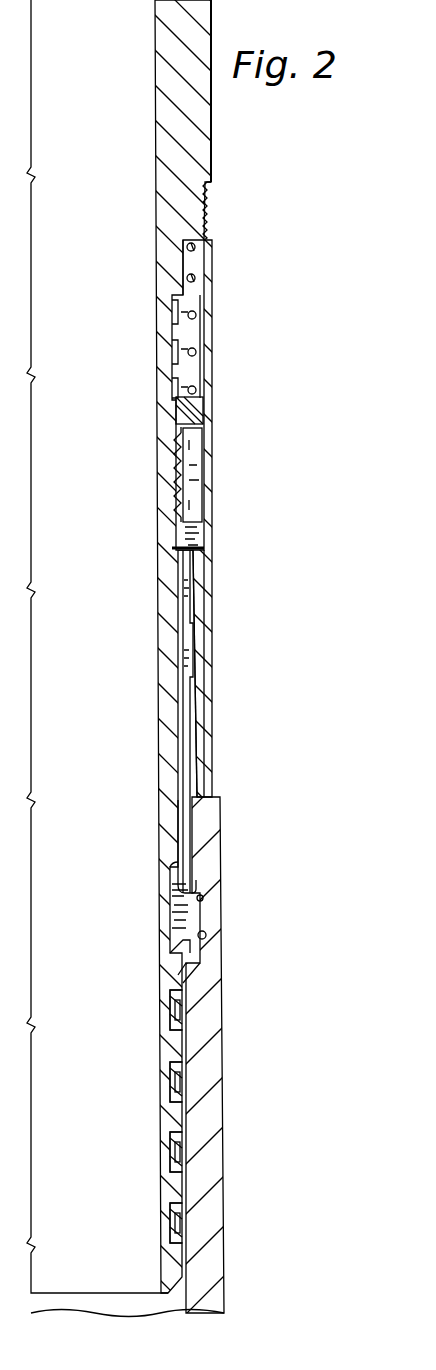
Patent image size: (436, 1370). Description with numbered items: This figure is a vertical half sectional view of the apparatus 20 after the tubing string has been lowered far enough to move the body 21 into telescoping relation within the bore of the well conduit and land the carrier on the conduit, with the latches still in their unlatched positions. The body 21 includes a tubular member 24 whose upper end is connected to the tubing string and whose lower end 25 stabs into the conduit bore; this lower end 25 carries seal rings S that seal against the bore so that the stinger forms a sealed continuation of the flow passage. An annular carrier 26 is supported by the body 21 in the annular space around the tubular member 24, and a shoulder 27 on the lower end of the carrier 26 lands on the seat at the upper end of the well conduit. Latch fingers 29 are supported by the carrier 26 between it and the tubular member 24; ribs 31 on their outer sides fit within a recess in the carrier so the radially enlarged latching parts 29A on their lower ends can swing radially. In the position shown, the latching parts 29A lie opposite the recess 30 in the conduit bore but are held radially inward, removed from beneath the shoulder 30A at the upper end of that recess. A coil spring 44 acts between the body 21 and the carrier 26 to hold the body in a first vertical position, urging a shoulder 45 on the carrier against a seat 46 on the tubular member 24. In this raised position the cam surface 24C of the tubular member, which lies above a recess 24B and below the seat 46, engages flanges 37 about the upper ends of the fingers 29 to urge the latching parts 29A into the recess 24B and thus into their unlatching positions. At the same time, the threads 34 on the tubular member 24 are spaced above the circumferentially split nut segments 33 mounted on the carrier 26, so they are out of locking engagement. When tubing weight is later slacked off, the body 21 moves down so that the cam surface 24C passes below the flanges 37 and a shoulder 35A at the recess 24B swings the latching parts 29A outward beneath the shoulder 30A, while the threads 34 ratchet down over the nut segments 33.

The body 21 is at (216, 152).
The coil spring 44 is at (199, 288).
The threads 34 is at (181, 343).
The nut segments 33 is at (176, 470).
The apparatus 20 is at (220, 494).
The seat 46 is at (182, 545).
The shoulder 45 is at (176, 552).
The flanges 37 is at (178, 562).
The tubular member 24 is at (157, 597).
The ribs 31 is at (194, 663).
The cam surface 24C is at (194, 712).
The carrier 26 is at (201, 749).
The shoulder 27 is at (206, 815).
The fingers 29 is at (182, 828).
The shoulder 35A is at (172, 866).
The shoulder 30A is at (201, 897).
The latching parts 29A is at (206, 899).
The recess 30 is at (207, 937).
The recess 24B is at (174, 946).
The seal rings S is at (182, 1027).
The lower end 25 is at (184, 1128).